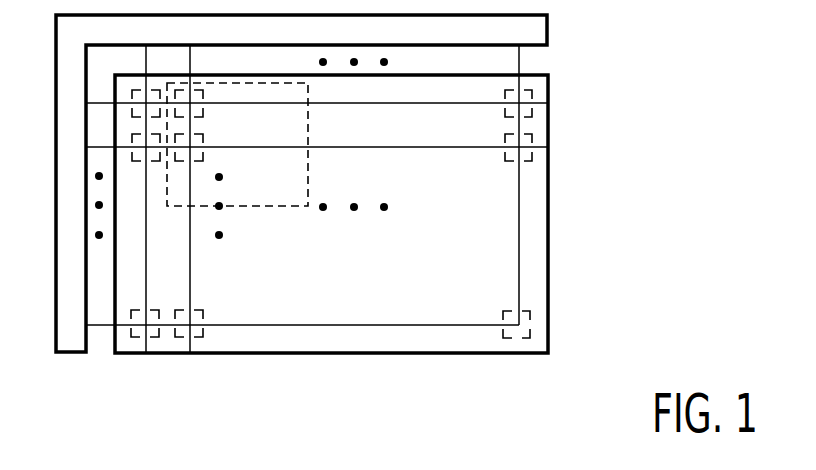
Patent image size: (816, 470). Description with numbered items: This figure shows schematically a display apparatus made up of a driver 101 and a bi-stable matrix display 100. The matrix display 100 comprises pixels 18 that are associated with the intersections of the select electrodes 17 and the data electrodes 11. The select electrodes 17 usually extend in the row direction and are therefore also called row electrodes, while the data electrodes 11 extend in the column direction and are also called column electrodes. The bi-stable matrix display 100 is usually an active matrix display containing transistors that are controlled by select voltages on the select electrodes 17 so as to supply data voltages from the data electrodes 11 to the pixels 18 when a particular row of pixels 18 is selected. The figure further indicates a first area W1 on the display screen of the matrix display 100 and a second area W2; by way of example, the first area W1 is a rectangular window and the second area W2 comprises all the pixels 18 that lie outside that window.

The bi-stable matrix display 100 is at (490, 364).
The driver 101 is at (548, 27).
The data electrodes 11 is at (519, 62).
The select electrodes 17 is at (100, 325).
The pixels 18 is at (532, 103).
The first area W1 is at (310, 175).
The second area W2 is at (421, 241).